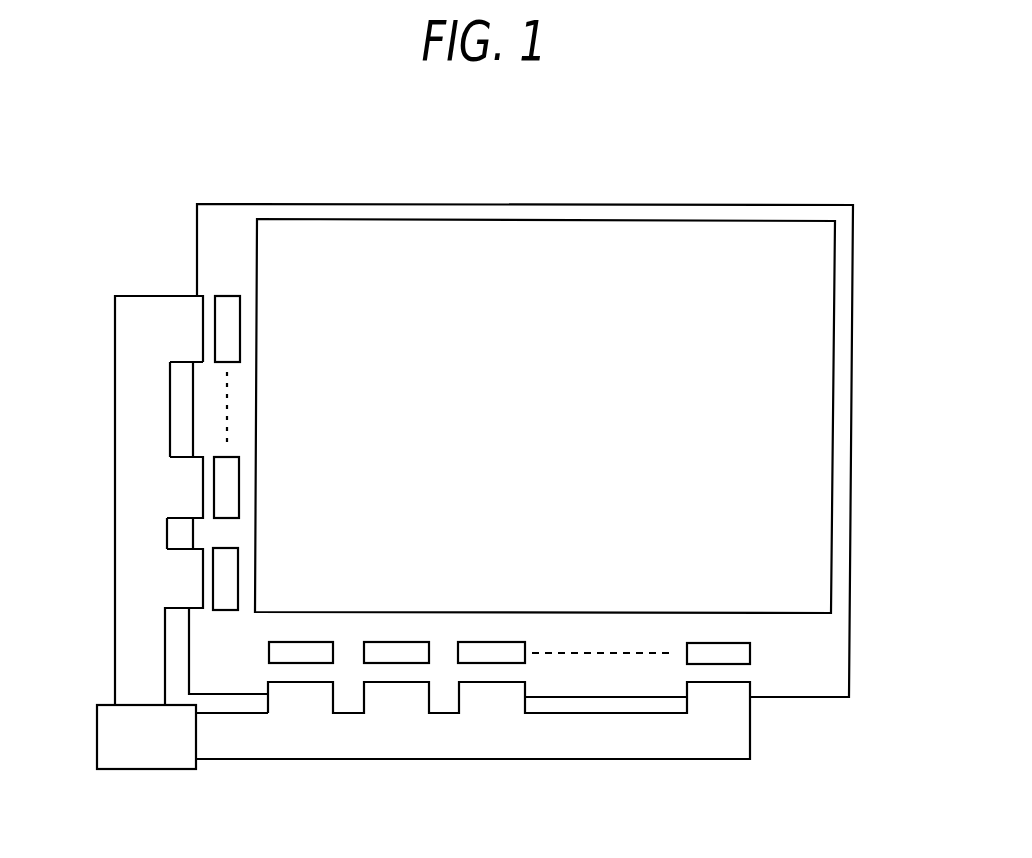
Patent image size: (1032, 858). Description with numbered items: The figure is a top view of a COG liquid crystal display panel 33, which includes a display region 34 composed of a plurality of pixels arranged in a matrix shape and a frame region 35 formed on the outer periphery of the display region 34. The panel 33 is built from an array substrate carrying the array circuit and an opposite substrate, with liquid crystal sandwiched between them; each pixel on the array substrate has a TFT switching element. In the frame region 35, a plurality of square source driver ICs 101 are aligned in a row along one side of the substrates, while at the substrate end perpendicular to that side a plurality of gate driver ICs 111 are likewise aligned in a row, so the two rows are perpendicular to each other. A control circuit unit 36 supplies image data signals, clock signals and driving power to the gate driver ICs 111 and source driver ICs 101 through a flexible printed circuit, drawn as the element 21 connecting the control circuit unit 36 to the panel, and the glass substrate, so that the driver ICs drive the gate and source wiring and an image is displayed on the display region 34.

The flexible printed circuit board 21 is at (456, 752).
The liquid crystal display panel 33 is at (853, 375).
The display region 34 is at (703, 222).
The frame region 35 is at (838, 665).
The control circuit unit 36 is at (100, 740).
The source driver IC 101 is at (303, 663).
The gate driver IC 111 is at (215, 578).